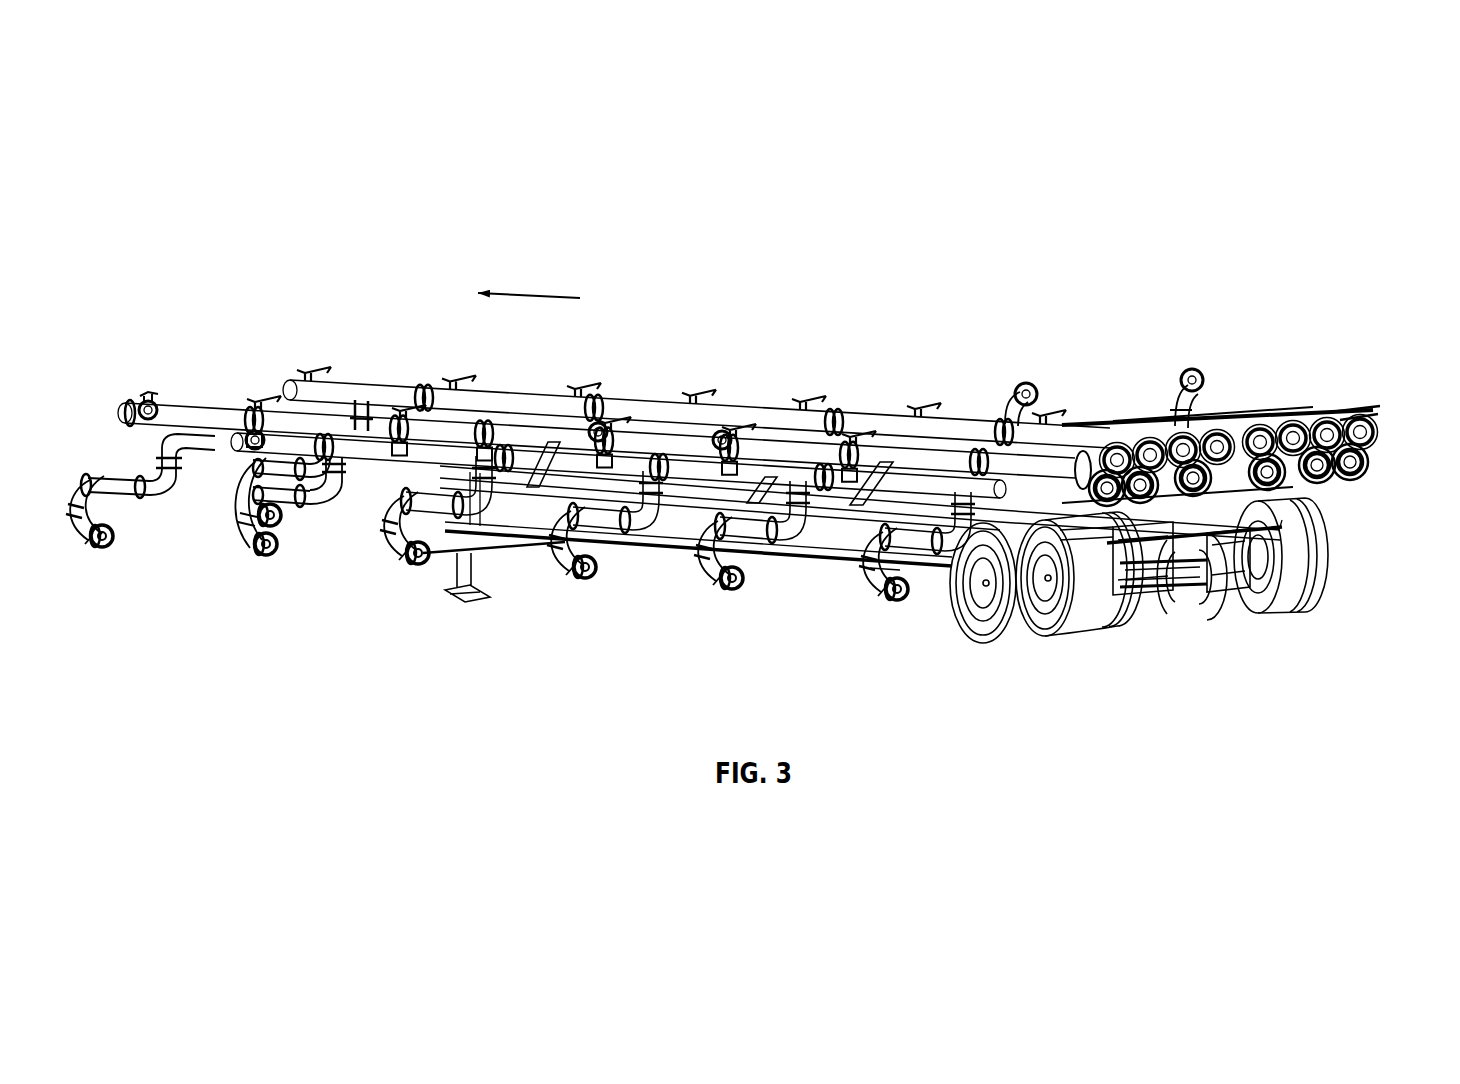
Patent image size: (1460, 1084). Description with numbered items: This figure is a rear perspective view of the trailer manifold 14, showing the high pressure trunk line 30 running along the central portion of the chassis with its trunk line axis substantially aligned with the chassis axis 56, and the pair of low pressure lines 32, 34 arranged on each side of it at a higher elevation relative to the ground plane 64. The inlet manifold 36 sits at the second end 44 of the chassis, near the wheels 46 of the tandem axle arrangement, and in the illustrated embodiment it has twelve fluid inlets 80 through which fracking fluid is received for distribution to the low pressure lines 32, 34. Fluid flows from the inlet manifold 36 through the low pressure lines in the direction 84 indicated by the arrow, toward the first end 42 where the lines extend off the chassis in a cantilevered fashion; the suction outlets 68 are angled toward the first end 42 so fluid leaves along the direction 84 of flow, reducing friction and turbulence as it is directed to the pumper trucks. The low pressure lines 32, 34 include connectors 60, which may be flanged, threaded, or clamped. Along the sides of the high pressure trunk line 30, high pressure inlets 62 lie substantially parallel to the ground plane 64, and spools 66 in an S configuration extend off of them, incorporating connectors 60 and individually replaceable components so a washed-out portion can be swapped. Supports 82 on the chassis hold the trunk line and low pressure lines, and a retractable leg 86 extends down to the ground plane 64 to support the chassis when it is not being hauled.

The trailer manifold 14 is at (1231, 258).
The high pressure trunk line 30 is at (215, 422).
The low pressure line 32 is at (360, 386).
The low pressure line 34 is at (196, 407).
The inlet manifold 36 is at (1346, 346).
The first end 42 is at (306, 308).
The second end 44 is at (1012, 666).
The wheels 46 is at (1200, 627).
The chassis axis 56 is at (1225, 517).
The connectors 60 is at (595, 432).
The high pressure inlets 62 is at (345, 460).
The ground plane 64 is at (870, 620).
The spools 66 is at (243, 552).
The suction outlets 68 is at (135, 402).
The fluid inlets 80 is at (1378, 472).
The supports 82 is at (555, 456).
The direction 84 is at (540, 296).
The leg 86 is at (475, 602).